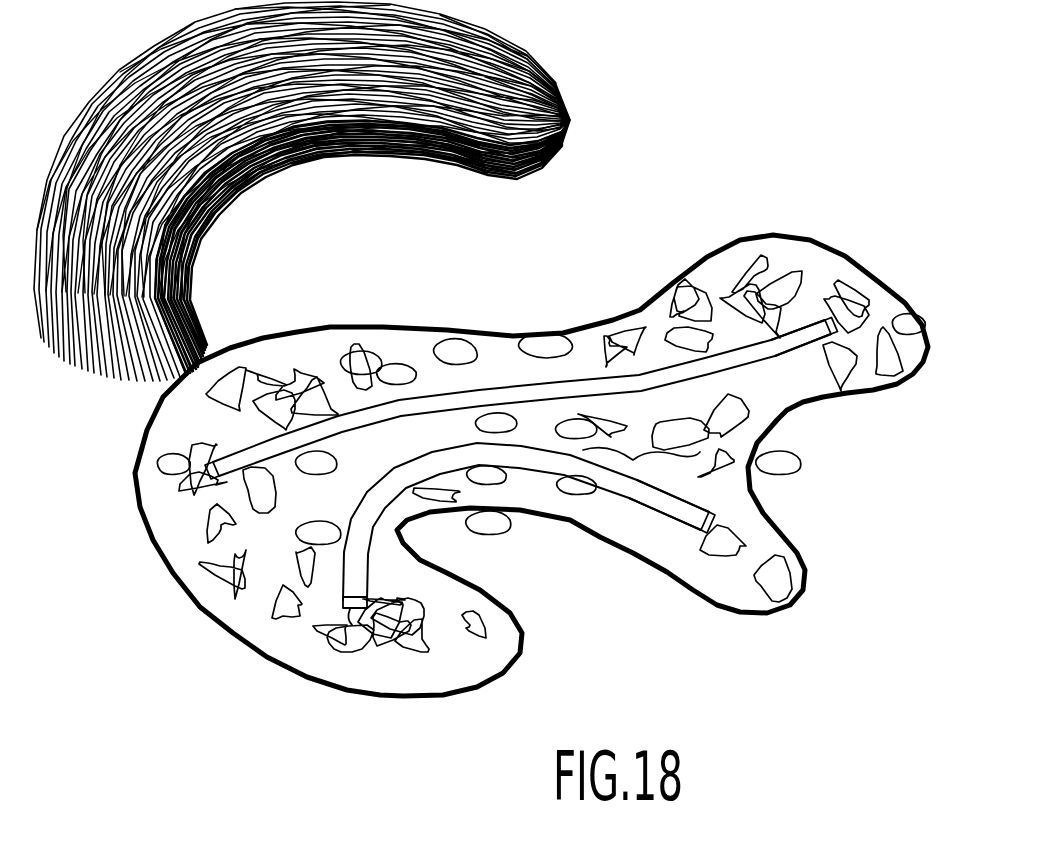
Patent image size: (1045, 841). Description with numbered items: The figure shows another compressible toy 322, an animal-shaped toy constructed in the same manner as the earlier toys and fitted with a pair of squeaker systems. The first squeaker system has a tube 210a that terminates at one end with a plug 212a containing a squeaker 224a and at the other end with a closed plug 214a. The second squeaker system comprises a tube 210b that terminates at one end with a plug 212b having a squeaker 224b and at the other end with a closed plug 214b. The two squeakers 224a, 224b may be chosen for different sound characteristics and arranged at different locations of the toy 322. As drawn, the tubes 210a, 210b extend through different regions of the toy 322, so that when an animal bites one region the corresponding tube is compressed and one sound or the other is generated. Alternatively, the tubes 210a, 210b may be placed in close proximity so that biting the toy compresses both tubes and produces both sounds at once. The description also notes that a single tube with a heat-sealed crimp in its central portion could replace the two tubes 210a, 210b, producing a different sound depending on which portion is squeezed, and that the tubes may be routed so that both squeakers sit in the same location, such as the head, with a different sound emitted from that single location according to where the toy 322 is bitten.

The compressible toy 322 is at (758, 456).
The tube 210a is at (533, 407).
The tube 210b is at (526, 521).
The plug 212a is at (825, 320).
The plug 212b is at (699, 533).
The closed plug 214a is at (207, 480).
The closed plug 214b is at (378, 631).
The squeaker 224a is at (837, 327).
The squeaker 224b is at (723, 525).